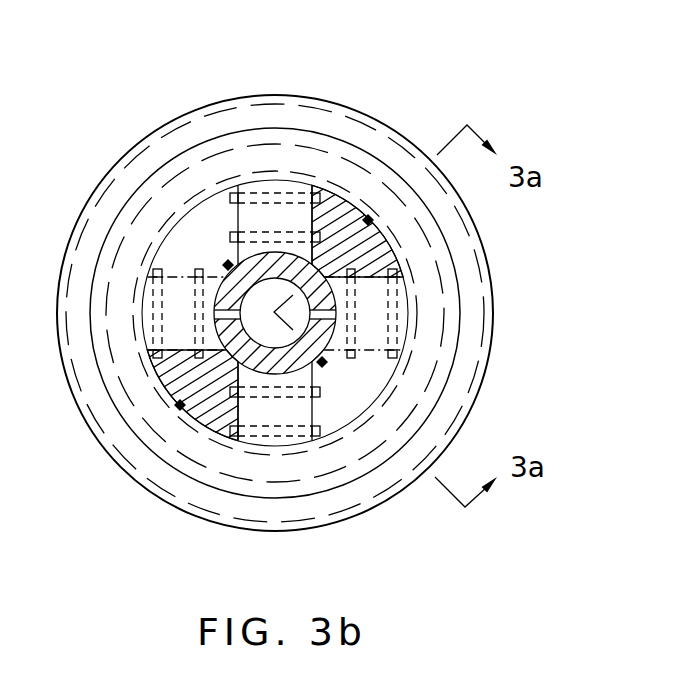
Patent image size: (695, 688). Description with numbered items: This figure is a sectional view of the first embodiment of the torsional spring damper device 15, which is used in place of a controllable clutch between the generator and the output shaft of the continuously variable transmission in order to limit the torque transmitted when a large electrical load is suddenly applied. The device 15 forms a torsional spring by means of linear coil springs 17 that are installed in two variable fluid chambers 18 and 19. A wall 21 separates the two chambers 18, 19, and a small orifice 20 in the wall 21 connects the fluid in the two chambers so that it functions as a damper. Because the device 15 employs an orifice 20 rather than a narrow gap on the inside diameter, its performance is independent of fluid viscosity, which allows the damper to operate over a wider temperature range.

The torsional spring damper device 15 is at (548, 130).
The linear coil springs 17 is at (285, 192).
The variable fluid chamber 18 is at (258, 185).
The variable fluid chamber 19 is at (402, 337).
The small orifice 20 is at (192, 355).
The wall 21 is at (313, 233).